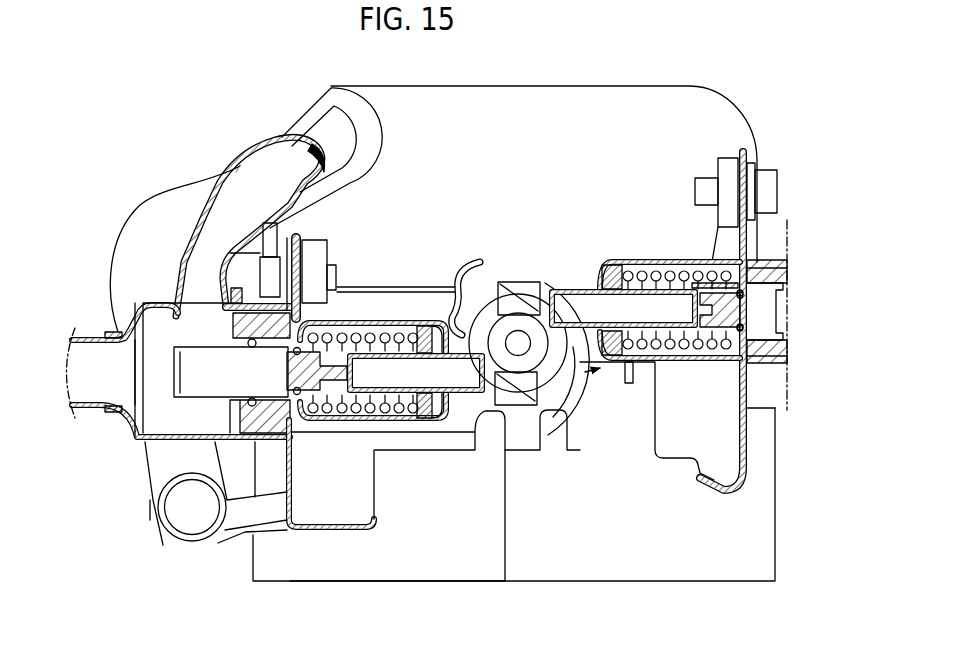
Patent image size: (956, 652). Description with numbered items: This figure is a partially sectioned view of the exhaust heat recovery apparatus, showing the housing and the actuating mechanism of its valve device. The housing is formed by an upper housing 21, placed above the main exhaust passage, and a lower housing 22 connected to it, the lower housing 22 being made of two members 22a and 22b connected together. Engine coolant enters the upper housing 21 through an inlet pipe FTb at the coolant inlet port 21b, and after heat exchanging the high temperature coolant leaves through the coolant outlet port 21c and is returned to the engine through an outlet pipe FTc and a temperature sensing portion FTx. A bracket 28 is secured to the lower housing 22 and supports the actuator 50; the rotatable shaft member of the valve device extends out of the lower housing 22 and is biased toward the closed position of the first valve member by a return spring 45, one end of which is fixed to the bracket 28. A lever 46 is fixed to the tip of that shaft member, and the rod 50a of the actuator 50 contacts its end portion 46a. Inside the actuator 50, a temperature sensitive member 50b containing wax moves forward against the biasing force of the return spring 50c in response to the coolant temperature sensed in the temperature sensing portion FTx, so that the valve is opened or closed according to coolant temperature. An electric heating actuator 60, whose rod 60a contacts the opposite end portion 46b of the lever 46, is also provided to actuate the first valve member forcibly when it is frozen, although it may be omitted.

The upper housing 21 is at (726, 93).
The coolant inlet port 21b is at (267, 237).
The coolant outlet port 21c is at (338, 100).
The lower housing 22 is at (250, 570).
The lower housing member 22a is at (407, 563).
The lower housing member 22b is at (643, 565).
The bracket 28 is at (353, 495).
The return spring 45 is at (478, 258).
The lever 46 is at (540, 372).
The end portion of lever 46a is at (512, 388).
The opposite end portion of lever 46b is at (525, 290).
The actuator 50 is at (372, 319).
The rod 50a is at (443, 327).
The temperature sensitive member 50b is at (208, 372).
The return spring 50c is at (392, 423).
The electric heating actuator 60 is at (634, 259).
The rod 60a is at (582, 295).
The inlet pipe FTb is at (125, 288).
The outlet pipe FTc is at (240, 165).
The temperature sensing portion FTx is at (162, 418).